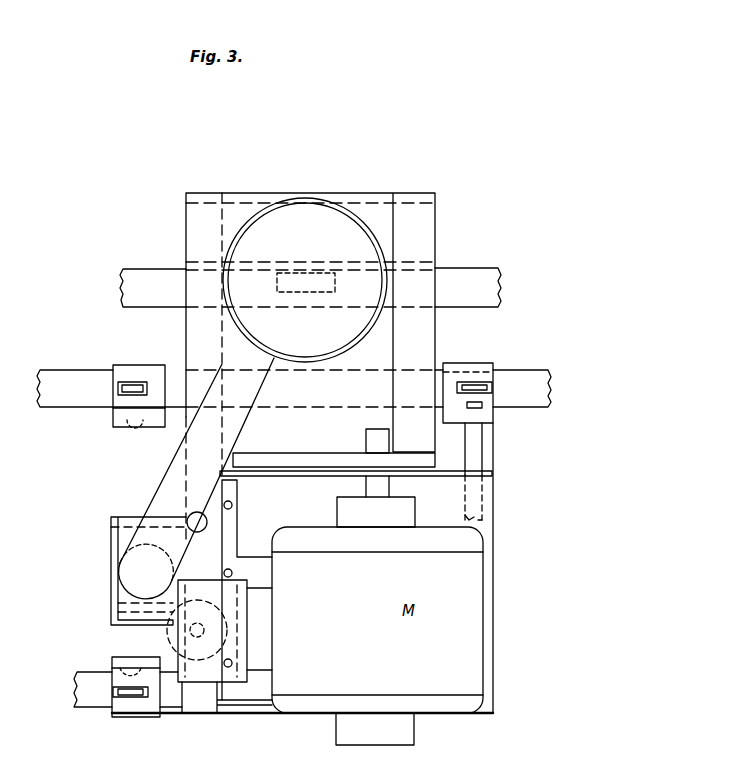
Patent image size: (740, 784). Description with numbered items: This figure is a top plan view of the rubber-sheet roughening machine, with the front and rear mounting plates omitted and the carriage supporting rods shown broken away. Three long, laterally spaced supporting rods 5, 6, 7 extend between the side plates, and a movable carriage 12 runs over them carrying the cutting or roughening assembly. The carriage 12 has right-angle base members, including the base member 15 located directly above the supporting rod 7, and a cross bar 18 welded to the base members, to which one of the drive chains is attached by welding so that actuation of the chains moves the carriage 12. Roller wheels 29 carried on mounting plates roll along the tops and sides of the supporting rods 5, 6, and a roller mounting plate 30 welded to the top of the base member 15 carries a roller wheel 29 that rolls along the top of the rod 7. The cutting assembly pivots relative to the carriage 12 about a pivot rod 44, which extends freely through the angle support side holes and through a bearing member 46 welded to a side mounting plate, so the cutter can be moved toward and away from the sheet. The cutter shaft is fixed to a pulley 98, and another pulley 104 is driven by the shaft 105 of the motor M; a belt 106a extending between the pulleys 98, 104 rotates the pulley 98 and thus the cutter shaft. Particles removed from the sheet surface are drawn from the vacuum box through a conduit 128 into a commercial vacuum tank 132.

The supporting rod 5 is at (95, 673).
The supporting rod 6 is at (62, 380).
The supporting rod 7 is at (488, 276).
The carriage 12 is at (272, 721).
The base member 15 is at (350, 200).
The cross bar 18 is at (183, 290).
The roller wheel 29 is at (125, 383).
The roller mounting plate 30 is at (287, 292).
The pivot rod 44 is at (475, 445).
The bearing member 46 is at (487, 411).
The pulley 98 is at (283, 454).
The pulley 104 is at (421, 470).
The motor shaft 105 is at (367, 441).
The belt 106a is at (312, 463).
The conduit 128 is at (160, 500).
The vacuum tank 132 is at (360, 315).